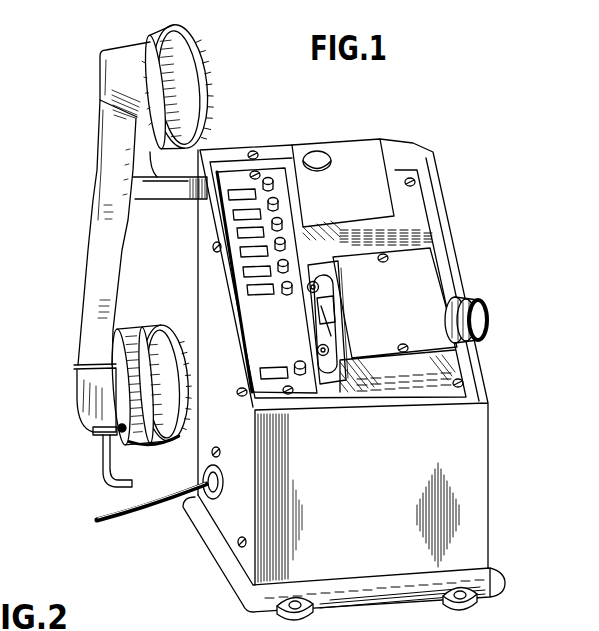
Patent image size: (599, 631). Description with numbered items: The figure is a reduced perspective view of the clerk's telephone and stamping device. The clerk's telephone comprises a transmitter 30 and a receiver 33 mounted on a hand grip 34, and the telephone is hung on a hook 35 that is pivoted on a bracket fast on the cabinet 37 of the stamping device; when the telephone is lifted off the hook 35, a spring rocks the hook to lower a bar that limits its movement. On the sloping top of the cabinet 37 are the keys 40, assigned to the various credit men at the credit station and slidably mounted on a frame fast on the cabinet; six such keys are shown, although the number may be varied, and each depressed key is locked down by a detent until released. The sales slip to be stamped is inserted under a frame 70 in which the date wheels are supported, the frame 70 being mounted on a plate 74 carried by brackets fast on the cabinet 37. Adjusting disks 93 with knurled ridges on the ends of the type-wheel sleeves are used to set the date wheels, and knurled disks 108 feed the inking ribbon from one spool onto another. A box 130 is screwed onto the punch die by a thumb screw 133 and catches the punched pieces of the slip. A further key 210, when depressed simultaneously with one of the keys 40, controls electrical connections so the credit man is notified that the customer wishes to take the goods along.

The transmitter 30 is at (157, 352).
The receiver 33 is at (194, 88).
The hand grip 34 is at (118, 240).
The hook 35 is at (157, 198).
The cabinet 37 is at (481, 449).
The keys 40 is at (275, 187).
The frame 70 is at (428, 267).
The plate 74 is at (422, 208).
The adjusting disks 93 is at (480, 300).
The knurled disks 108 is at (343, 330).
The box 130 is at (365, 150).
The thumb screw 133 is at (316, 157).
The key 210 is at (298, 362).